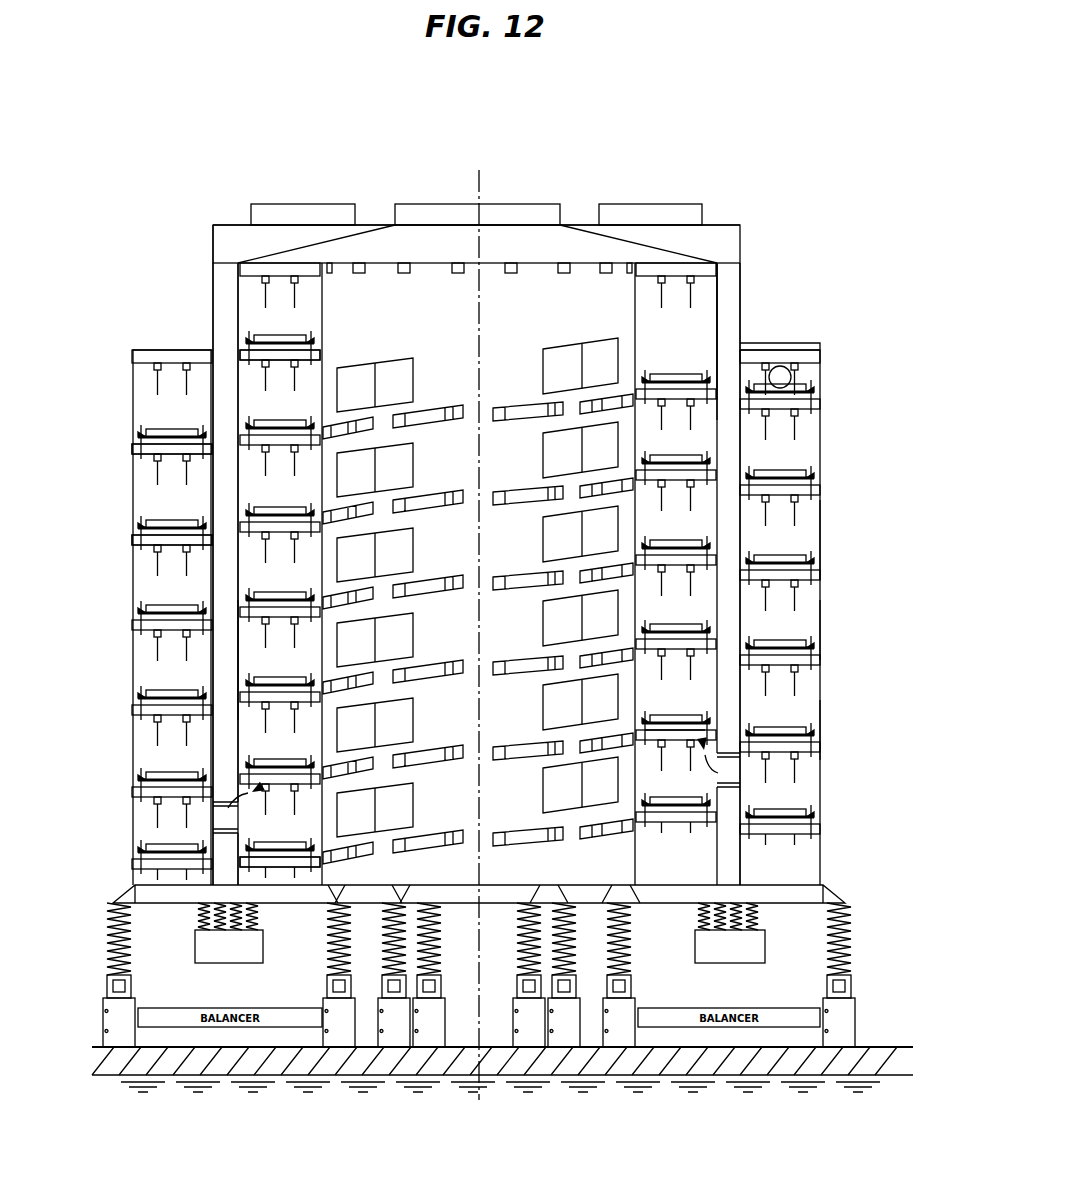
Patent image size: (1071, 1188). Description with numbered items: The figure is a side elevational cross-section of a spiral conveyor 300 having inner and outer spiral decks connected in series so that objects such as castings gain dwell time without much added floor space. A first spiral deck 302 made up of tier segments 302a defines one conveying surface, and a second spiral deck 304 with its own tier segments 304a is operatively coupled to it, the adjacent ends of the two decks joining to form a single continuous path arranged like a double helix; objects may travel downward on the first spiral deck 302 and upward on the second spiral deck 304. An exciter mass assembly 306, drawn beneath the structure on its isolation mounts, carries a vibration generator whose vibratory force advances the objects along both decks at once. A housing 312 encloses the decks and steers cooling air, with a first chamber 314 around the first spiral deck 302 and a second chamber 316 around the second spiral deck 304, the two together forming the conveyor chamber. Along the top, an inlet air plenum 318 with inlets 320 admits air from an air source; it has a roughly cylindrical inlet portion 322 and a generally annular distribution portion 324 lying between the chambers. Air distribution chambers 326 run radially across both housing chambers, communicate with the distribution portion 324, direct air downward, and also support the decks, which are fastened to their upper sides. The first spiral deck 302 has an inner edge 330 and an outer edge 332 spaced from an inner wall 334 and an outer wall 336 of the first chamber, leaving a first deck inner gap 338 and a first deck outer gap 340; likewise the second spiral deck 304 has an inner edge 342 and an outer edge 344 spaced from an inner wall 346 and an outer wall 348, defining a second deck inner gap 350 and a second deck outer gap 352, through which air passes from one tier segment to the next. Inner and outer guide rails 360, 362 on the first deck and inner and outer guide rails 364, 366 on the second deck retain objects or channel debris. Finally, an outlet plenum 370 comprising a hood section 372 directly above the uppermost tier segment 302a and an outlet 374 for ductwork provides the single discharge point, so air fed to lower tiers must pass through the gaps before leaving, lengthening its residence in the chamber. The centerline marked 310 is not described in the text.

The spiral conveyor 300 is at (344, 138).
The first spiral deck 302 is at (292, 340).
The tier segments 302a is at (300, 352).
The second spiral deck 304 is at (160, 438).
The tier segments 304a is at (165, 432).
The exciter mass assembly 306 is at (238, 948).
The center line 310 is at (482, 213).
The housing 312 is at (748, 212).
The first chamber 314 is at (205, 267).
The second chamber 316 is at (145, 343).
The inlet air plenum 318 is at (715, 240).
The inlets 320 is at (303, 210).
The inlet portion 322 is at (213, 240).
The distribution portion 324 is at (227, 660).
The air distribution chambers 326 is at (241, 354).
The inner edge 330 is at (640, 385).
The outer edge 332 is at (718, 360).
The inner wall 334 is at (633, 293).
The outer wall 336 is at (720, 285).
The first deck inner gap 338 is at (638, 368).
The first deck outer gap 340 is at (741, 390).
The inner edge 342 is at (745, 476).
The outer edge 344 is at (808, 474).
The inner wall 346 is at (745, 556).
The outer wall 348 is at (821, 535).
The second deck inner gap 350 is at (745, 630).
The second deck outer gap 352 is at (820, 633).
The inner guide rail 360 is at (706, 712).
The outer guide rail 362 is at (706, 702).
The inner guide rail 364 is at (750, 722).
The outer guide rail 366 is at (822, 723).
The outlet plenum 370 is at (547, 238).
The hood section 372 is at (364, 232).
The outlet 374 is at (447, 212).